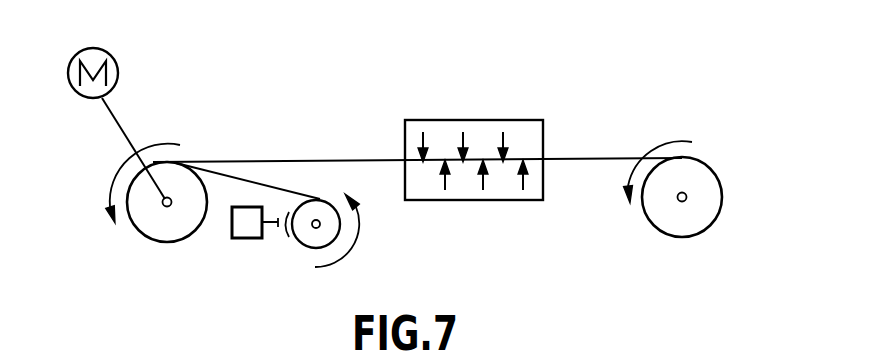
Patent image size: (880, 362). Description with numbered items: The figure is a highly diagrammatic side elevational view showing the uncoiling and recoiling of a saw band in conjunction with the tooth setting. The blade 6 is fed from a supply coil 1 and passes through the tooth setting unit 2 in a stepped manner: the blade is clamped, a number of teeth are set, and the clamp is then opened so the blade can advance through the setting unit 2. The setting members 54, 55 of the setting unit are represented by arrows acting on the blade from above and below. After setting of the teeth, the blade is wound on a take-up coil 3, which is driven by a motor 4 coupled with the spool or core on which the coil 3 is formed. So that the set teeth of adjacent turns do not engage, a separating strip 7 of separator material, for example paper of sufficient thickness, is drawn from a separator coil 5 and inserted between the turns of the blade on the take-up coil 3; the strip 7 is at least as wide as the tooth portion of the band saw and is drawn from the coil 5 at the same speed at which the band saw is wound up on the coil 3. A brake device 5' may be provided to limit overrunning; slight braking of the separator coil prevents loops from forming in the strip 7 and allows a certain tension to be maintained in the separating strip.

The supply coil 1 is at (698, 210).
The tooth setting unit 2 is at (452, 110).
The take-up coil 3 is at (160, 230).
The motor 4 is at (84, 93).
The separator coil 5 is at (304, 237).
The brake device 5' is at (235, 255).
The blade 6 is at (263, 162).
The separating strip 7 is at (215, 172).
The setting members 54 is at (503, 157).
The setting members 55 is at (448, 167).